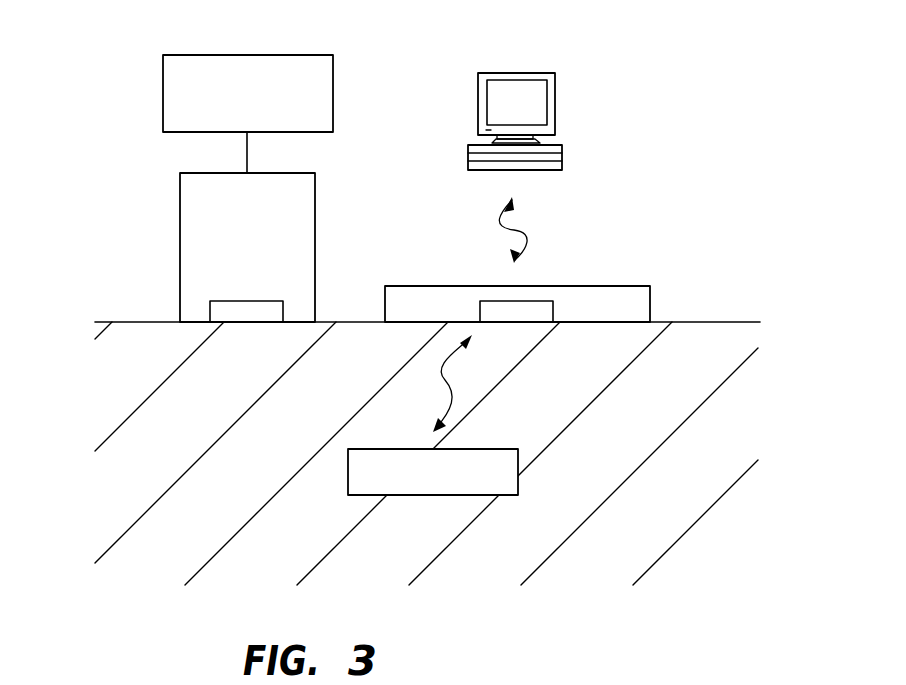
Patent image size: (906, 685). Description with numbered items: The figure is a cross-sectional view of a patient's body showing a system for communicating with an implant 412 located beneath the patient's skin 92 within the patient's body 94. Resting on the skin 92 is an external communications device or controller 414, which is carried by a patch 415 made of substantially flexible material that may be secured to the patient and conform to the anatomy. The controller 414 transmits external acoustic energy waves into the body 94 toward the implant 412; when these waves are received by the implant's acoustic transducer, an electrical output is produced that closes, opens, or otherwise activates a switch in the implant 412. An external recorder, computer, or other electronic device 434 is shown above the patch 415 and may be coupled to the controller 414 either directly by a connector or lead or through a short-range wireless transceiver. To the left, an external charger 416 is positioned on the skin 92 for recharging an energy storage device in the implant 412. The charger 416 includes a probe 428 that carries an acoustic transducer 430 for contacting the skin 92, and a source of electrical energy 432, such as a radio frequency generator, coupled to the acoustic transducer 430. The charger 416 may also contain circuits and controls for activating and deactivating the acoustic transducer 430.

The skin 92 is at (738, 322).
The patient's body 94 is at (728, 433).
The implant 412 is at (455, 495).
The external communications device or controller 414 is at (553, 308).
The patch 415 is at (582, 285).
The charger 416 is at (203, 165).
The probe 428 is at (180, 236).
The acoustic transducer 430 is at (210, 308).
The source of electrical energy 432 is at (292, 55).
The electronic device 434 is at (555, 98).